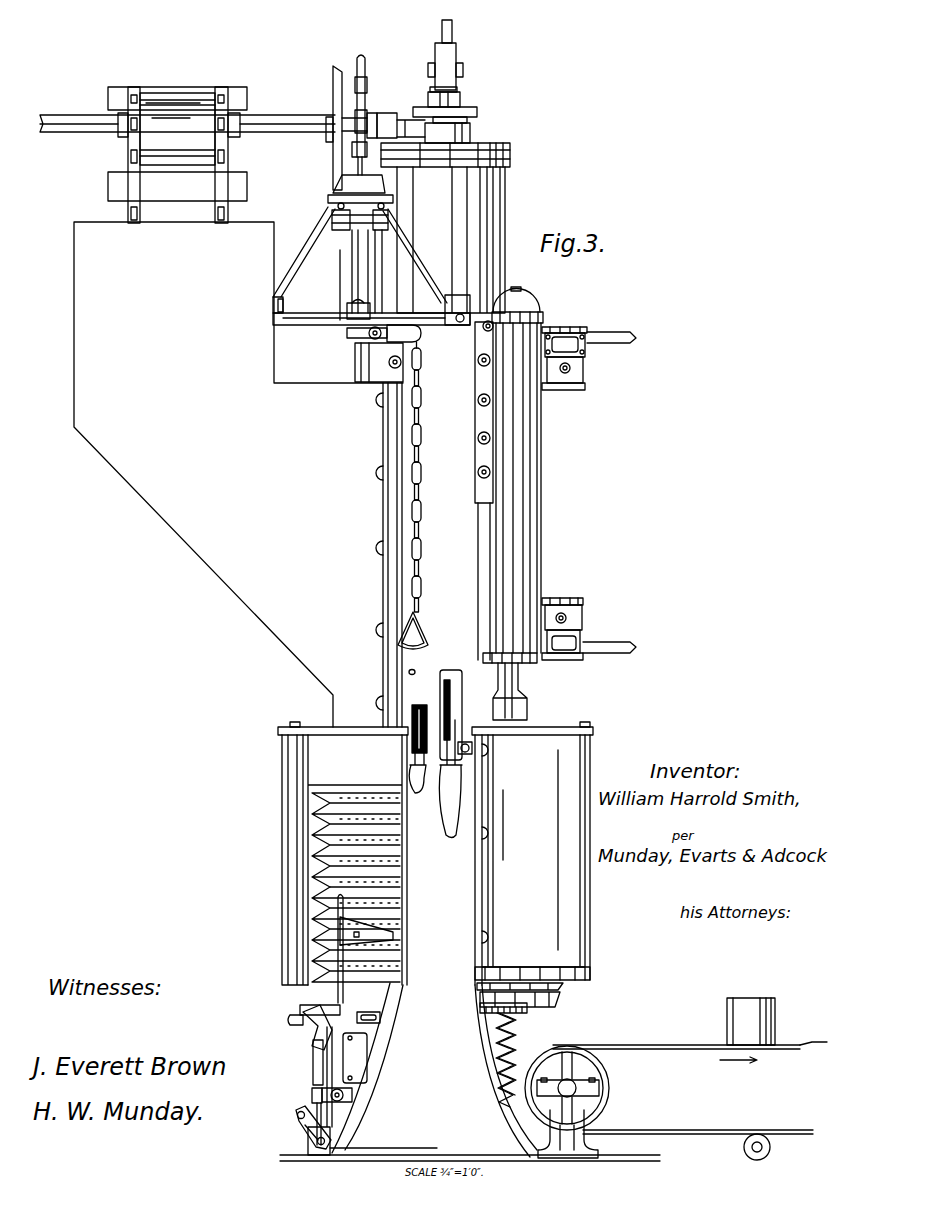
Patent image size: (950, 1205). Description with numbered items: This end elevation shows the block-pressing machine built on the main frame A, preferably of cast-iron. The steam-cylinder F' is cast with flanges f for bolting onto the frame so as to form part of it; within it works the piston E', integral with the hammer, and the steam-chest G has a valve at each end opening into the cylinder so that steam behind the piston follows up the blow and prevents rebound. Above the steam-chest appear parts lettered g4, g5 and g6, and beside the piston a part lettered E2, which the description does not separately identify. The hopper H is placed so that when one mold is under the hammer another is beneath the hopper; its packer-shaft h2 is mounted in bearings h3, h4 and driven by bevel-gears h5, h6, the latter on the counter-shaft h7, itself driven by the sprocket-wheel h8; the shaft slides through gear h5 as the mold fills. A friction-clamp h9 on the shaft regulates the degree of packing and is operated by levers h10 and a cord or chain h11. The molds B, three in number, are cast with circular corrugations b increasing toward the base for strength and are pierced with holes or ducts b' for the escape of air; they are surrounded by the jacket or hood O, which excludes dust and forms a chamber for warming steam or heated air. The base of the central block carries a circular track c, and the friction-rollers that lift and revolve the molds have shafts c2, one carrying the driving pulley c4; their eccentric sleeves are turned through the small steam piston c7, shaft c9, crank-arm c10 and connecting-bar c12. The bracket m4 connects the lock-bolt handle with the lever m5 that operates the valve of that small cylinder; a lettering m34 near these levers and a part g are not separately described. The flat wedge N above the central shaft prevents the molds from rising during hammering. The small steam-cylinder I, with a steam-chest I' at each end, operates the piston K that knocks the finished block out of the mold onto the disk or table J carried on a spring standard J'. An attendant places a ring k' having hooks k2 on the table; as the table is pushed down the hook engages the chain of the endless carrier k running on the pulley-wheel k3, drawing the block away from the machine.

The counter-shaft h7 is at (187, 112).
The sprocket-wheel h8 is at (148, 140).
The bevel-gear h6 is at (335, 98).
The bevel-gear h5 is at (340, 183).
The bearing h4 is at (328, 200).
The steam-chest G is at (345, 280).
The bearing h3 is at (347, 312).
The cylinder F' is at (445, 228).
The rod g4 is at (452, 30).
The valve body g6 is at (460, 70).
The flange E2 is at (460, 97).
The piston E' is at (473, 118).
The cylinder g5 is at (403, 122).
The hopper H is at (238, 474).
The friction-clamp h9 is at (350, 334).
The levers h10 is at (421, 336).
The packer-shaft h2 is at (362, 370).
The main frame A is at (411, 555).
The cord or chain h11 is at (421, 437).
The small steam-cylinder I is at (514, 475).
The flanges f is at (483, 490).
The piston K is at (527, 698).
The steam-chest I' is at (589, 493).
The jacket or hood O is at (283, 838).
The molds B is at (357, 860).
The holes or ducts b' is at (368, 840).
The circular projections or corrugations b is at (365, 933).
The bracket m4 is at (375, 934).
The flat wedge N is at (425, 757).
The handle g is at (445, 826).
The bar m34 is at (312, 982).
The lever m5 is at (380, 1016).
The piston c7 is at (355, 1058).
The shafts c2 is at (290, 1020).
The circular track c is at (307, 1030).
The connecting-bar c12 is at (313, 1063).
The pulley c4 is at (312, 1092).
The shaft c9 is at (297, 1113).
The crank-arm c10 is at (307, 1130).
The hooks k2 is at (563, 987).
The rings k' is at (627, 1018).
The disk or table J is at (512, 1014).
The spring standard or piston J' is at (514, 1060).
The pulley-wheel k3 is at (610, 1073).
The endless apron or chain carrier k is at (683, 1093).